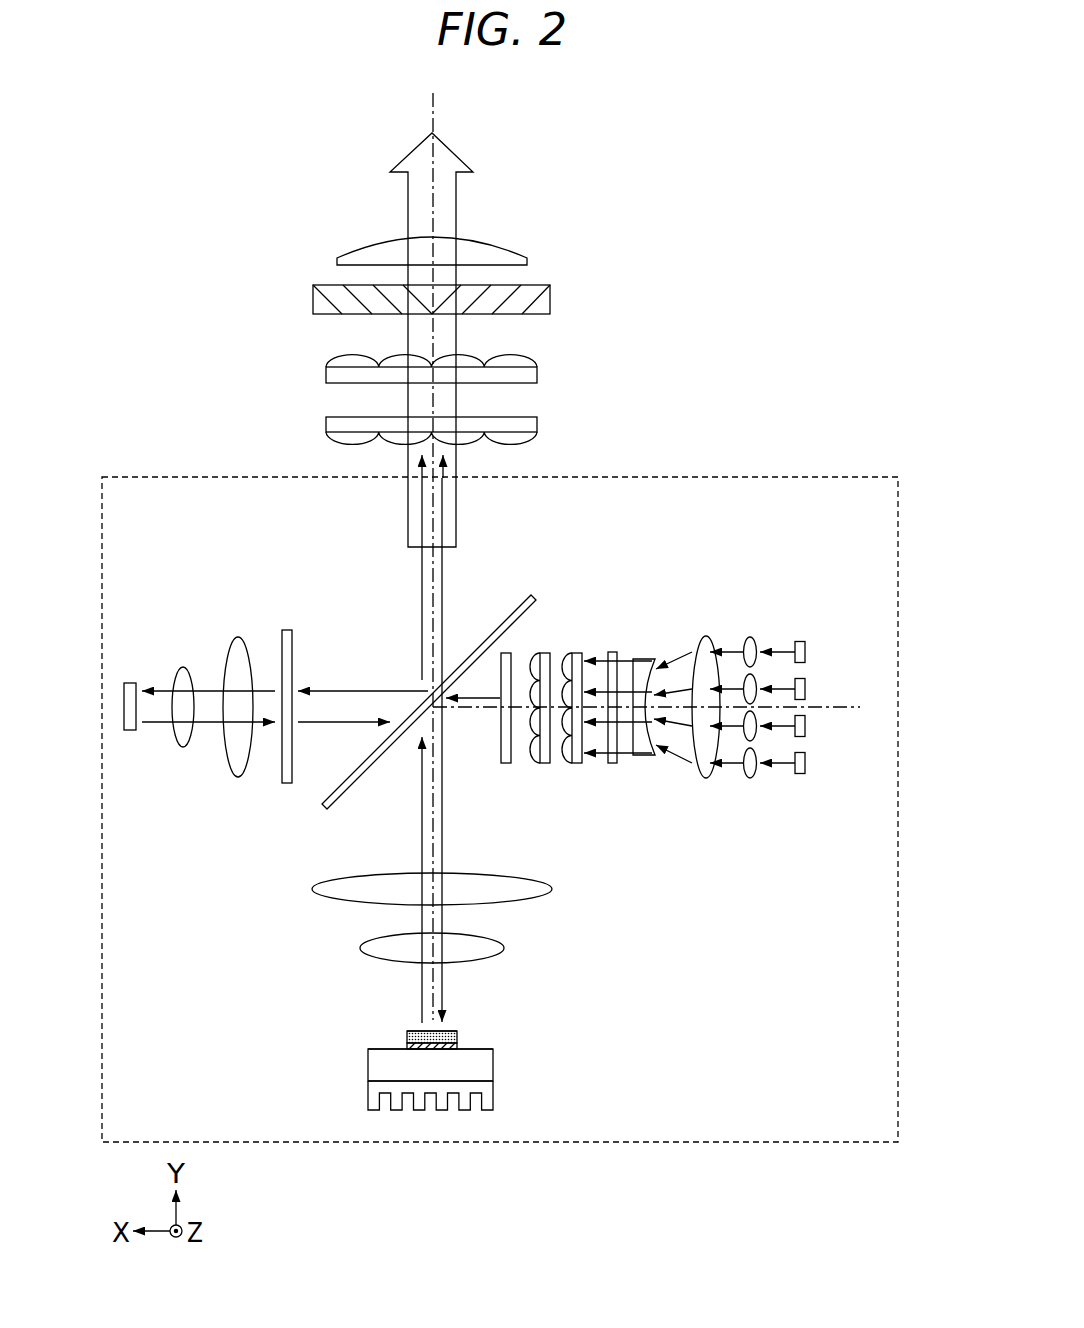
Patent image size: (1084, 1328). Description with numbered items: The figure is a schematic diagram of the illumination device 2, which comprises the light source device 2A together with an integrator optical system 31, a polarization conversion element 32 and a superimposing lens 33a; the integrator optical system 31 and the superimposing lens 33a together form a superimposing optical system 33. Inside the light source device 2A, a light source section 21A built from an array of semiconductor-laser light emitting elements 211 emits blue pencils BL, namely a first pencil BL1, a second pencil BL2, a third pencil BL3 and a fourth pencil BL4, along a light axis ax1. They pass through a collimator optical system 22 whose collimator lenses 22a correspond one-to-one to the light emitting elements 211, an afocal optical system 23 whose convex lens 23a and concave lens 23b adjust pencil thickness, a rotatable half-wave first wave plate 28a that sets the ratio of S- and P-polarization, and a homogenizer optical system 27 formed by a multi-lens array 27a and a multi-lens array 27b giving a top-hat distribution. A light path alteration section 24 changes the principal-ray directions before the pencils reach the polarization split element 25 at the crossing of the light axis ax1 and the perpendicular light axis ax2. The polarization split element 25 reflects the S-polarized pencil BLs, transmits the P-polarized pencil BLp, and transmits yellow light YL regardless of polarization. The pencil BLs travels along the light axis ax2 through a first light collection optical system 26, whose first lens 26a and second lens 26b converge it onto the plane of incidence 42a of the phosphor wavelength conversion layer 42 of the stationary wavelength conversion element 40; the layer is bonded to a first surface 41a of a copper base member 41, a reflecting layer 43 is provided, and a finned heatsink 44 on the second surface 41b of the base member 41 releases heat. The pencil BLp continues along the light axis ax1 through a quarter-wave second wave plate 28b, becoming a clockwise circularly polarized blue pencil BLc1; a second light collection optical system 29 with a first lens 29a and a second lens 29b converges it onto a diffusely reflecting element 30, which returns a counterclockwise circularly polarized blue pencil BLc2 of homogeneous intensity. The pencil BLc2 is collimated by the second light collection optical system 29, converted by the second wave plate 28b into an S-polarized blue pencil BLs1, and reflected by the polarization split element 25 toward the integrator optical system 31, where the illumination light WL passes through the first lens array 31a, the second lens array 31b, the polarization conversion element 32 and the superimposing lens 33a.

The illumination device 2 is at (820, 205).
The light source device 2A is at (782, 477).
The light source section 21A is at (803, 630).
The light emitting element 211 is at (806, 650).
The collimator optical system 22 is at (754, 628).
The collimator lens 22a is at (750, 636).
The afocal optical system 23 is at (737, 580).
The convex lens 23a is at (705, 636).
The concave lens 23b is at (647, 659).
The light path alteration section 24 is at (505, 765).
The polarization split element 25 is at (518, 598).
The first light collection optical system 26 is at (642, 860).
The first lens 26a is at (538, 879).
The second lens 26b is at (490, 932).
The homogenizer optical system 27 is at (653, 772).
The multi-lens array 27a is at (578, 765).
The multi-lens array 27b is at (547, 765).
The first wave plate 28a is at (613, 652).
The second wave plate 28b is at (288, 630).
The second light collection optical system 29 is at (242, 562).
The first lens 29a is at (174, 685).
The second lens 29b is at (233, 643).
The diffusely reflecting element 30 is at (128, 683).
The integrator optical system 31 is at (628, 362).
The first lens array 31a is at (538, 425).
The second lens array 31b is at (538, 375).
The polarization conversion element 32 is at (551, 300).
The superimposing optical system 33 is at (515, 335).
The superimposing lens 33a is at (514, 243).
The wavelength conversion element 40 is at (358, 1066).
The base member 41 is at (487, 1071).
The first surface 41a is at (380, 1050).
The second surface 41b is at (385, 1081).
The wavelength conversion layer 42 is at (460, 1036).
The plane of incidence 42a is at (410, 1031).
The reflecting layer 43 is at (460, 1047).
The heatsink 44 is at (490, 1097).
The illumination light WL is at (408, 212).
The yellow fluorescent light YL is at (422, 592).
The pencils BL is at (730, 782).
The first pencil BL1 is at (780, 650).
The second pencil BL2 is at (785, 690).
The third pencil BL3 is at (785, 727).
The fourth pencil BL4 is at (785, 763).
The pencil BLs is at (445, 852).
The blue pencil BLs1 is at (442, 573).
The pencil BLp is at (338, 690).
The blue pencil BLc1 is at (267, 683).
The blue pencil BLc2 is at (264, 735).
The light axis ax1 is at (812, 708).
The light axis ax2 is at (435, 97).